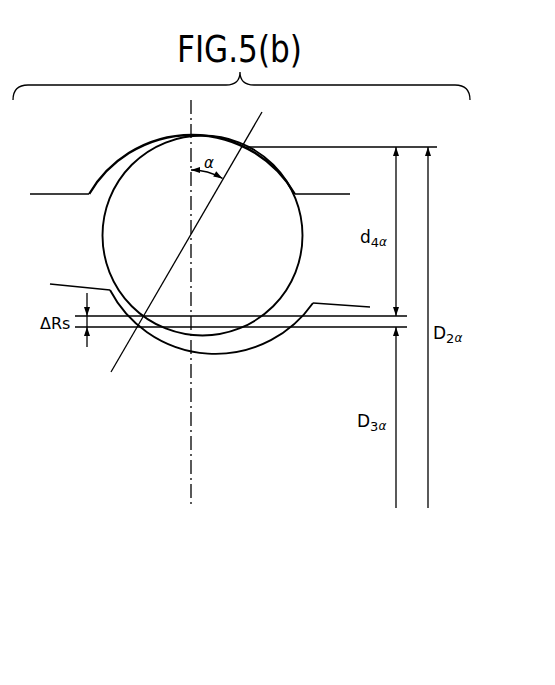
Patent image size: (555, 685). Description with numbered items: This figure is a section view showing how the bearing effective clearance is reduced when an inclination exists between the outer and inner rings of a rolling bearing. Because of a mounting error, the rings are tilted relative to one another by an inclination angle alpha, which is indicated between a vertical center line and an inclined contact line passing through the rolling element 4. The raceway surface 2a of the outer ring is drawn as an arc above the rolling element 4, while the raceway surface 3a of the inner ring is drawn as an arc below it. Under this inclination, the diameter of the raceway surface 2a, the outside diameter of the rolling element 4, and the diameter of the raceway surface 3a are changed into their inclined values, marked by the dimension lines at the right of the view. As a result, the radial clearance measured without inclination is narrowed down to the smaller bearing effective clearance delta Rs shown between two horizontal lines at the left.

The raceway surface of the outer ring 2a is at (138, 148).
The raceway surface of the inner ring 3a is at (263, 344).
The rolling element 4 is at (116, 230).